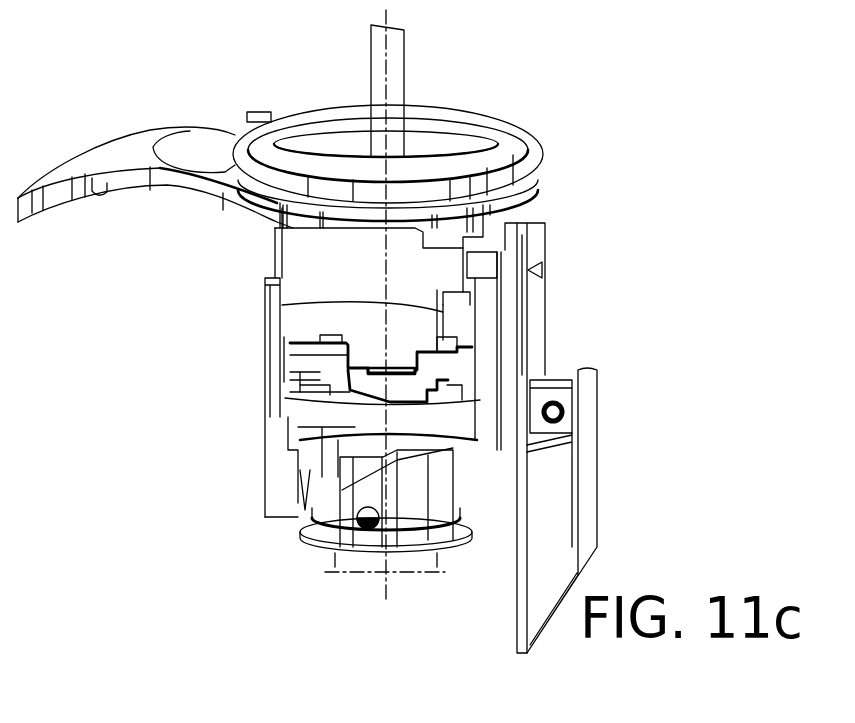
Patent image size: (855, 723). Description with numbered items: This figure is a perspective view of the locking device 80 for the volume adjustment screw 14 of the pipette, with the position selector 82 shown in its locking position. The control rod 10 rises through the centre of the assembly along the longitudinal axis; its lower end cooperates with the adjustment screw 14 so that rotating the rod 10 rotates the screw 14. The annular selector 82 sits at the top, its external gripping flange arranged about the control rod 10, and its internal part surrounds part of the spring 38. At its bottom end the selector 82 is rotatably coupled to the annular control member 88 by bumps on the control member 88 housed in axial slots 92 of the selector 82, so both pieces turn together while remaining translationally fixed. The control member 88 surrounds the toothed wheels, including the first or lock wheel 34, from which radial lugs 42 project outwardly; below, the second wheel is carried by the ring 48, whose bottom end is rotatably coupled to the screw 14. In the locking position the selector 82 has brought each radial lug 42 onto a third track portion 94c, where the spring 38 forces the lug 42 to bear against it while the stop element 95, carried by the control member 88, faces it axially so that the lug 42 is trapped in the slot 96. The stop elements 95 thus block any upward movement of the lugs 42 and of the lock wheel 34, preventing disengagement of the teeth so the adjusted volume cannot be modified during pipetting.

The control rod 10 is at (397, 75).
The position selector 82 is at (537, 165).
The spring 38 is at (370, 372).
The locking device 80 is at (250, 273).
The first wheel 34 is at (360, 385).
The stop element 95 is at (300, 350).
The slot 96 is at (290, 377).
The radial lugs 42 is at (290, 380).
The third track portion 94c is at (443, 400).
The axial slots 92 is at (448, 340).
The ring 48 is at (330, 497).
The volume adjustment screw 14 is at (340, 565).
The control member 88 is at (448, 422).